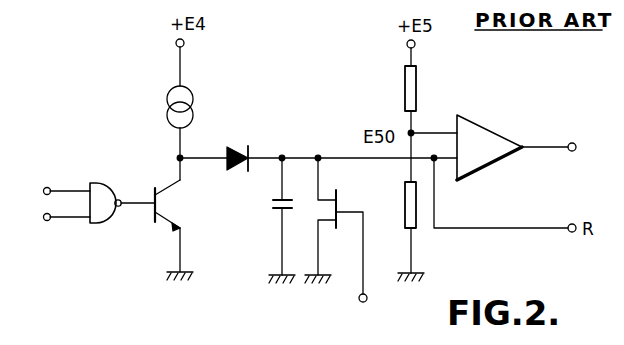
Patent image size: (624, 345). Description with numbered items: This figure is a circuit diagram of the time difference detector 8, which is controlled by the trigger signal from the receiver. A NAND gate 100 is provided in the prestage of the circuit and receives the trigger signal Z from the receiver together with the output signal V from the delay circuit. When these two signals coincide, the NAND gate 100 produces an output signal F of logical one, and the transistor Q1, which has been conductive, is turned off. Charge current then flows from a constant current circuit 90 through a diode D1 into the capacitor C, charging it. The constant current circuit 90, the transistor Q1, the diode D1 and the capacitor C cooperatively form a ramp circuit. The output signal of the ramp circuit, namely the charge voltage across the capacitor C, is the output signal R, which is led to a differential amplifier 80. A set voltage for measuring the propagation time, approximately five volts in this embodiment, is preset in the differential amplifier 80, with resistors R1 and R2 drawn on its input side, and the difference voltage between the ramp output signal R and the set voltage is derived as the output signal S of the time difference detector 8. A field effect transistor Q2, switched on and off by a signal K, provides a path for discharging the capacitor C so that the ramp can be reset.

The NAND gate 100 is at (103, 185).
The time difference detector 8 is at (119, 289).
The constant current circuit 90 is at (194, 97).
The transistor Q1 is at (177, 230).
The diode D1 is at (239, 146).
The output signal of the ramp circuit R is at (282, 146).
The capacitor C is at (273, 220).
The field effect transistor Q2 is at (336, 241).
The resistor R1 is at (394, 88).
The resistor R2 is at (400, 231).
The differential amplifier 80 is at (493, 132).